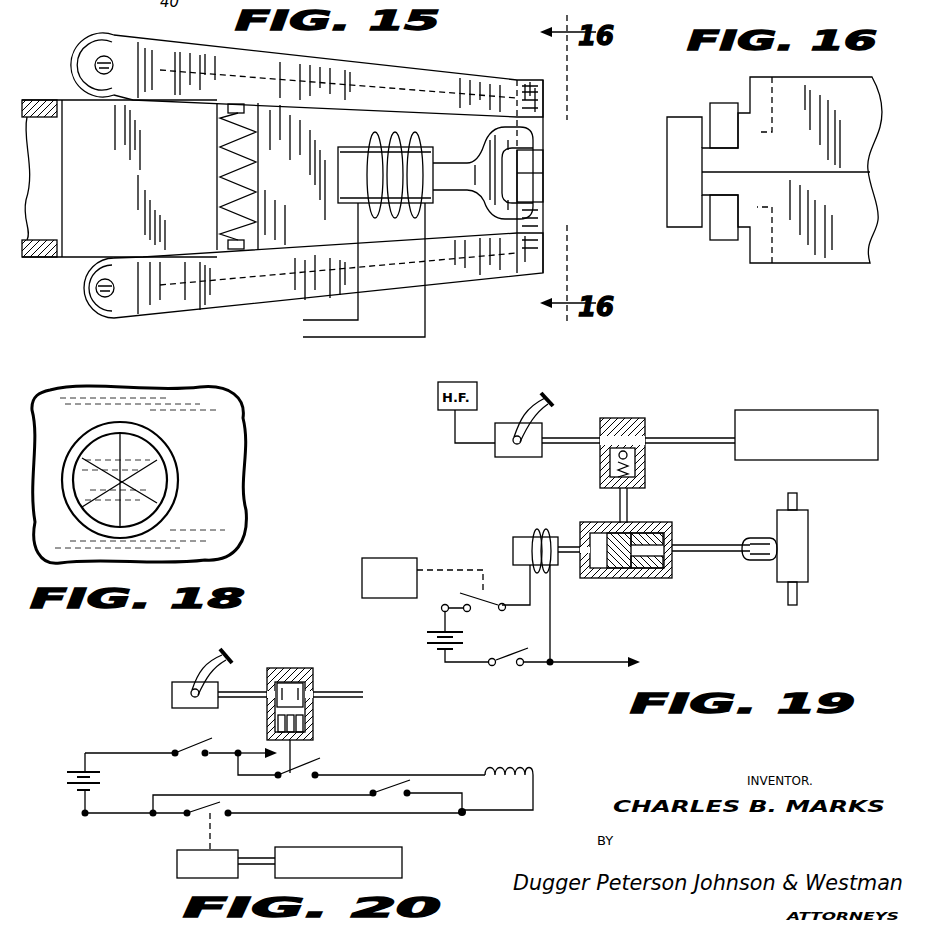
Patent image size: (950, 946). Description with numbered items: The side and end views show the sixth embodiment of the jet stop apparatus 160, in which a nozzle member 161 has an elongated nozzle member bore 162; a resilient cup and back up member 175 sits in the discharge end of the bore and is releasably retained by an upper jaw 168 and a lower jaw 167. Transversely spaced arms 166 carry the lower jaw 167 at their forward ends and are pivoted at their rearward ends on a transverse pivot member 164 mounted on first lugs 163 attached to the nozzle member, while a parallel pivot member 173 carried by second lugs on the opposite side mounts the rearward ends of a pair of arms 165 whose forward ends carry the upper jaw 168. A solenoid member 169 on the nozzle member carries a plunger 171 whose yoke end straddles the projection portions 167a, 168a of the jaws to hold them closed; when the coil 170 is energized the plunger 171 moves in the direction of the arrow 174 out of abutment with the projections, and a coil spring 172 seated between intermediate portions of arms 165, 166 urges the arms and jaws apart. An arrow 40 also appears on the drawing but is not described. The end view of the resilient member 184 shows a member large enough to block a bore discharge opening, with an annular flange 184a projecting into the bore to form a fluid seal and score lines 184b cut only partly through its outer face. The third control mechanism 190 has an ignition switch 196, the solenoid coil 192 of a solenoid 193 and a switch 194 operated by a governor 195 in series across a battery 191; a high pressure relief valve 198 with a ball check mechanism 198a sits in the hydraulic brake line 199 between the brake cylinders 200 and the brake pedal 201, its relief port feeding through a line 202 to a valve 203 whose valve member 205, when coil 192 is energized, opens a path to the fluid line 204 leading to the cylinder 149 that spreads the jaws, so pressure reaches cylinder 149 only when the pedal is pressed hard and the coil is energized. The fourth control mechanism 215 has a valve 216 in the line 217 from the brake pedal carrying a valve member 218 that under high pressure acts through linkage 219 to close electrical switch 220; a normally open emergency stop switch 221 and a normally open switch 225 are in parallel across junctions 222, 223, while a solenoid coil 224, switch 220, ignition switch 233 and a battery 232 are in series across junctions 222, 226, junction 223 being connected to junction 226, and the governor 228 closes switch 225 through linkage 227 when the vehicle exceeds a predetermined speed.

In FIG. 15, the direction arrow 40 is at (362, 352).
In FIG. 19, the cylinder 149 is at (808, 530).
In FIG. 15, the jet stop apparatus 160 is at (458, 285).
In FIG. 16, the jet stop apparatus 160 is at (792, 268).
In FIG. 15, the nozzle member 161 is at (108, 227).
In FIG. 15, the nozzle member bore 162 is at (63, 132).
In FIG. 15, the first lugs 163 is at (80, 263).
In FIG. 15, the transverse pivot member 164 is at (110, 297).
In FIG. 15, the arms 165 is at (400, 82).
In FIG. 15, the arms 166 is at (208, 304).
In FIG. 15, the lower jaw 167 is at (528, 267).
In FIG. 16, the lower jaw 167 is at (847, 248).
In FIG. 16, the projection portion 167a is at (713, 188).
In FIG. 15, the upper jaw 168 is at (528, 97).
In FIG. 16, the upper jaw 168 is at (813, 90).
In FIG. 16, the projection portion 168a is at (703, 157).
In FIG. 15, the solenoid member 169 is at (338, 149).
In FIG. 16, the solenoid member 169 is at (683, 132).
In FIG. 15, the coil 170 is at (356, 177).
In FIG. 15, the plunger 171 is at (460, 187).
In FIG. 16, the plunger 171 is at (725, 233).
In FIG. 15, the coil spring 172 is at (217, 158).
In FIG. 15, the pivot member 173 is at (97, 65).
In FIG. 15, the arrow 174 is at (188, 120).
In FIG. 15, the resilient cup and back up member 175 is at (500, 119).
In FIG. 18, the resilient member 184 is at (200, 407).
In FIG. 18, the annular flange 184a is at (153, 443).
In FIG. 18, the score lines 184b is at (153, 470).
In FIG. 19, the control mechanism 190 is at (866, 374).
In FIG. 19, the battery 191 is at (420, 652).
In FIG. 19, the solenoid coil 192 is at (540, 537).
In FIG. 19, the solenoid 193 is at (520, 542).
In FIG. 19, the switch 194 is at (492, 608).
In FIG. 19, the governor 195 is at (372, 560).
In FIG. 19, the ignition switch 196 is at (500, 667).
In FIG. 19, the high pressure relief valve 198 is at (642, 417).
In FIG. 19, the ball check mechanism 198a is at (635, 463).
In FIG. 19, the hydraulic brake line 199 is at (680, 437).
In FIG. 19, the brake cylinders 200 is at (752, 413).
In FIG. 19, the brake pedal 201 is at (530, 410).
In FIG. 20, the brake pedal 201 is at (205, 675).
In FIG. 19, the line 202 is at (630, 507).
In FIG. 19, the valve 203 is at (657, 578).
In FIG. 19, the fluid line 204 is at (708, 533).
In FIG. 19, the valve member 205 is at (623, 570).
In FIG. 20, the control mechanism 215 is at (157, 689).
In FIG. 20, the valve 216 is at (297, 668).
In FIG. 20, the line 217 is at (345, 690).
In FIG. 20, the valve member 218 is at (315, 707).
In FIG. 20, the linkage 219 is at (300, 748).
In FIG. 20, the electrical switch 220 is at (322, 757).
In FIG. 20, the emergency stop switch 221 is at (390, 790).
In FIG. 20, the junction 222 is at (463, 814).
In FIG. 20, the junction 223 is at (132, 808).
In FIG. 20, the solenoid coil 224 is at (517, 767).
In FIG. 20, the switch 225 is at (220, 817).
In FIG. 20, the junction 226 is at (85, 815).
In FIG. 20, the linkage 227 is at (205, 827).
In FIG. 20, the governor 228 is at (175, 875).
In FIG. 20, the battery 232 is at (77, 773).
In FIG. 20, the ignition switch 233 is at (200, 738).